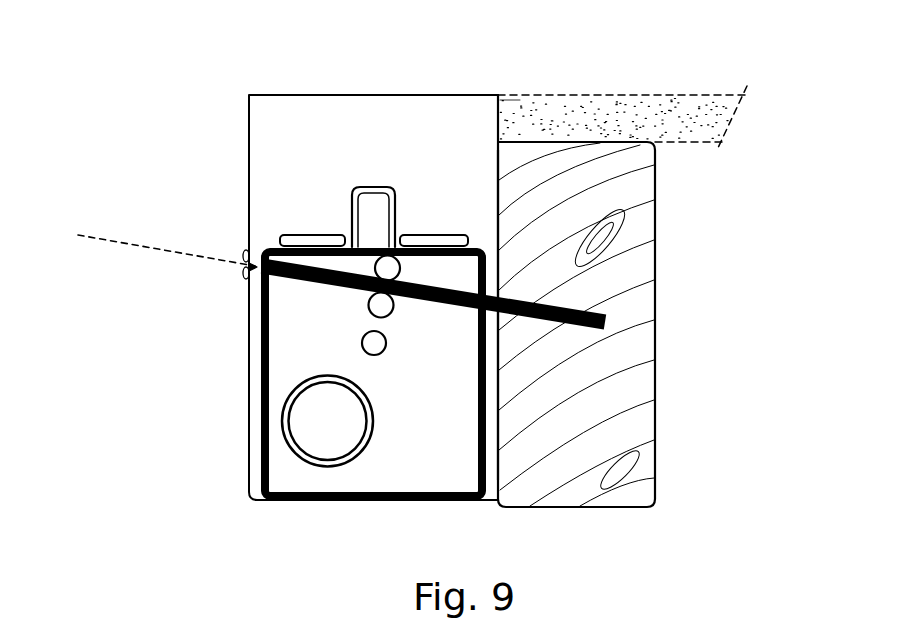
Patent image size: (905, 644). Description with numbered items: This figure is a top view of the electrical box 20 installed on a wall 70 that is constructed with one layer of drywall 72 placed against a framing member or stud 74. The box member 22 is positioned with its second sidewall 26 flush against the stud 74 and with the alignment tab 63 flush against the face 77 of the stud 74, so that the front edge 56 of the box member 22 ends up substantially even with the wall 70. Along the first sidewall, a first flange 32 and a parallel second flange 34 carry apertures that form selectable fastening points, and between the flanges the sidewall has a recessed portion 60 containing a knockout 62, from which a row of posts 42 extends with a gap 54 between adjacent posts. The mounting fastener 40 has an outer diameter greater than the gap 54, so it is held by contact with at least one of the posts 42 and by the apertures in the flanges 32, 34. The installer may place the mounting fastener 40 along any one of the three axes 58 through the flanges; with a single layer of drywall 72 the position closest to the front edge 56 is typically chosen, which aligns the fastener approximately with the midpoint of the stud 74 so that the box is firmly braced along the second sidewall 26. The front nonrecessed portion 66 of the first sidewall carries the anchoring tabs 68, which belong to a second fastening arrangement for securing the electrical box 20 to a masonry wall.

The electrical box 20 is at (205, 130).
The box member 22 is at (298, 502).
The second sidewall 26 is at (512, 203).
The first flange 32 is at (258, 390).
The second flange 34 is at (497, 355).
The mounting fastener 40 is at (347, 282).
The posts 42 is at (373, 347).
The gap 54 is at (375, 320).
The front edge 56 is at (372, 95).
The axes 58 is at (120, 238).
The recessed portion 60 is at (442, 450).
The knockout 62 is at (343, 435).
The alignment tab 63 is at (507, 140).
The nonrecessed portion 66 is at (394, 163).
The anchoring tabs 68 is at (312, 236).
The wall 70 is at (680, 95).
The drywall 72 is at (687, 122).
The stud 74 is at (632, 470).
The face 77 is at (577, 137).